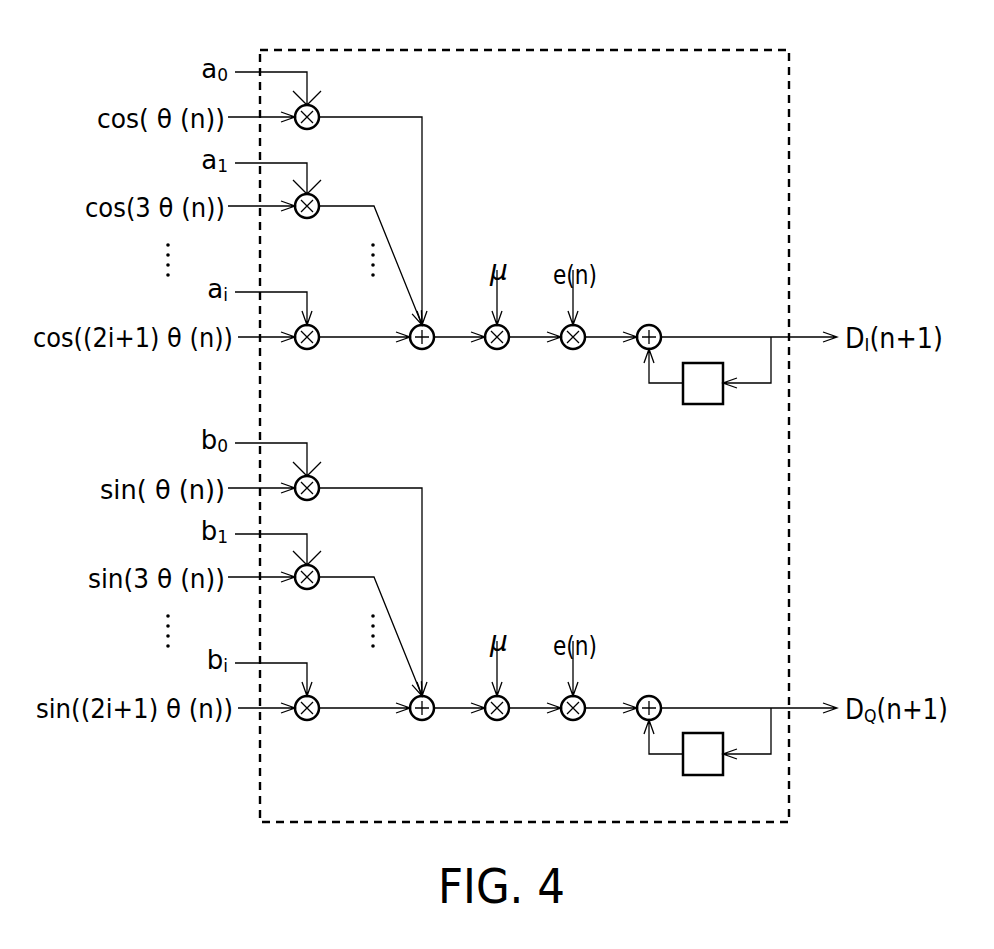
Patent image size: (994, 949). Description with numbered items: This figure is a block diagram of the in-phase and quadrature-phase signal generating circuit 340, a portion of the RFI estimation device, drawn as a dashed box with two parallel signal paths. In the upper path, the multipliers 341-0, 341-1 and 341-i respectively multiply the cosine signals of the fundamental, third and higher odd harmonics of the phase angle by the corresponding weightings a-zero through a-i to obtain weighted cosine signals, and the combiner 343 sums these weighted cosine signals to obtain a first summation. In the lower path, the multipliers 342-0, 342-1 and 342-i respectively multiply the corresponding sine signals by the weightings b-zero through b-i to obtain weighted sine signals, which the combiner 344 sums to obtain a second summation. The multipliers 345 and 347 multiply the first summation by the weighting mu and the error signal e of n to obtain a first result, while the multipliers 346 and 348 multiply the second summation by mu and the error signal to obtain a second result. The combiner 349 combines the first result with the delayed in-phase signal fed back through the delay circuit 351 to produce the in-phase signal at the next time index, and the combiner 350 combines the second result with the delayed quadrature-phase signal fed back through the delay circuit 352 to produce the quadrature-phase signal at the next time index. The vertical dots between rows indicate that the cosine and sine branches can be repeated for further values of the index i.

The in-phase and quadrature-phase signal generating circuit 340 is at (789, 146).
The multiplier 341-0 is at (308, 128).
The multiplier 341-1 is at (307, 218).
The multiplier 341-i is at (308, 349).
The multiplier 342-0 is at (308, 499).
The multiplier 342-1 is at (307, 589).
The multiplier 342-i is at (308, 720).
The combiner 343 is at (422, 349).
The combiner 344 is at (422, 720).
The multiplier 345 is at (497, 349).
The multiplier 346 is at (497, 720).
The multiplier 347 is at (573, 349).
The multiplier 348 is at (573, 720).
The combiner 349 is at (649, 325).
The combiner 350 is at (649, 696).
The delay circuit 351 is at (703, 405).
The delay circuit 352 is at (703, 776).